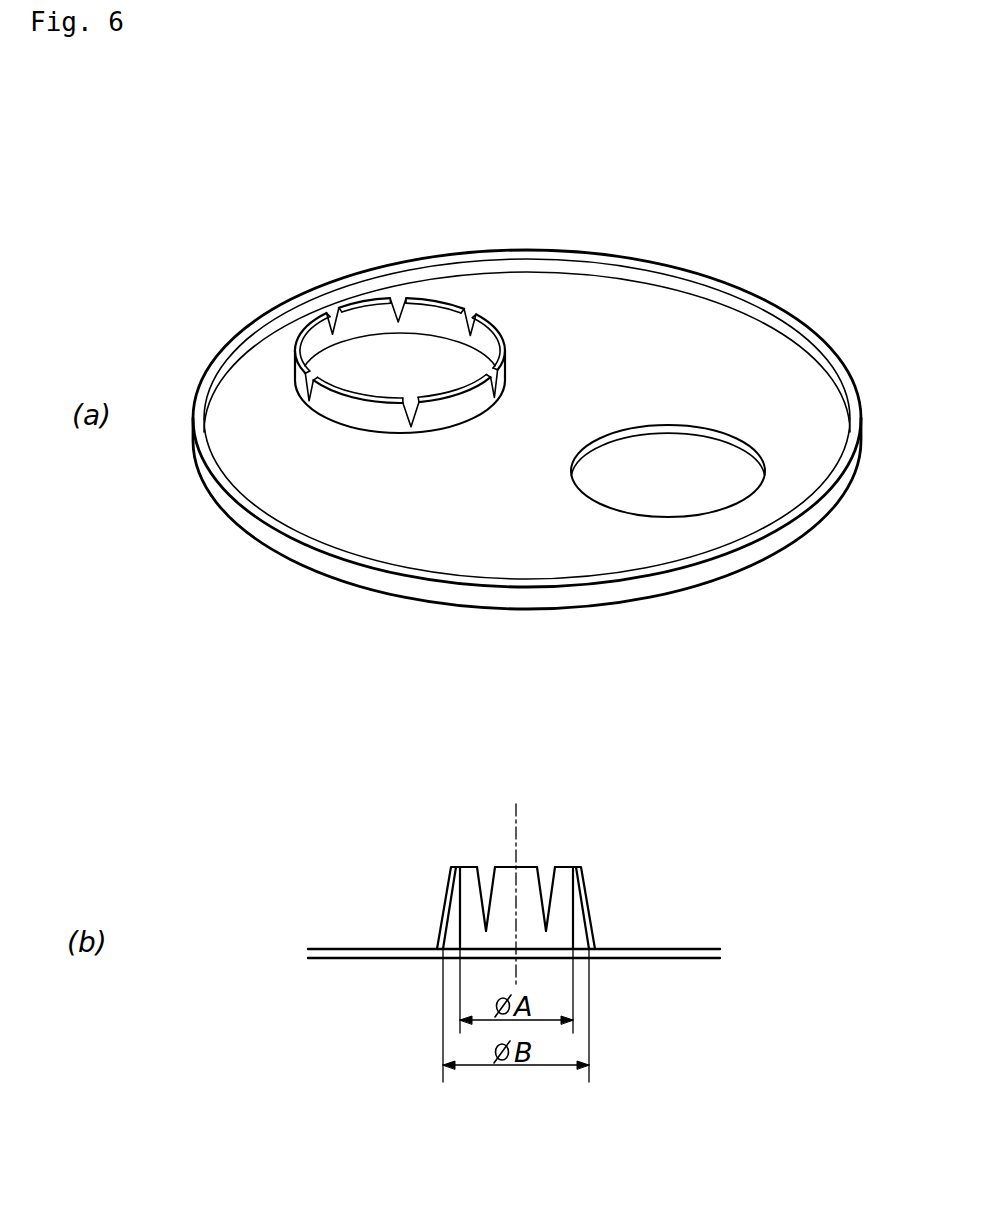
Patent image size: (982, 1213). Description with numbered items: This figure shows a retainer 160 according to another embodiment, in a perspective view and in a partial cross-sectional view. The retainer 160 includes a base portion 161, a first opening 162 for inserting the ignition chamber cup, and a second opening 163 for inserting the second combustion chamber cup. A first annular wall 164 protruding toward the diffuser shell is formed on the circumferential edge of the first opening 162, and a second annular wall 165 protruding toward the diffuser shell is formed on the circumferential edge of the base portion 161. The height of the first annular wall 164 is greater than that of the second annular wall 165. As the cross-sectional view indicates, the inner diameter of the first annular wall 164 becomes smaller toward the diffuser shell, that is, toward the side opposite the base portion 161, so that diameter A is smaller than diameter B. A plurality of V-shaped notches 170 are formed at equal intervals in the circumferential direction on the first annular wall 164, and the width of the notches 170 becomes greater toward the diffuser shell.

The retainer 160 is at (726, 271).
The base portion 161 is at (577, 307).
The first opening 162 is at (390, 360).
The second opening 163 is at (687, 450).
The first annular wall 164 is at (362, 413).
The second annular wall 165 is at (448, 597).
The V-shaped notches 170 is at (397, 305).